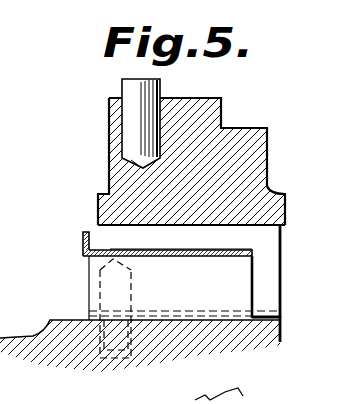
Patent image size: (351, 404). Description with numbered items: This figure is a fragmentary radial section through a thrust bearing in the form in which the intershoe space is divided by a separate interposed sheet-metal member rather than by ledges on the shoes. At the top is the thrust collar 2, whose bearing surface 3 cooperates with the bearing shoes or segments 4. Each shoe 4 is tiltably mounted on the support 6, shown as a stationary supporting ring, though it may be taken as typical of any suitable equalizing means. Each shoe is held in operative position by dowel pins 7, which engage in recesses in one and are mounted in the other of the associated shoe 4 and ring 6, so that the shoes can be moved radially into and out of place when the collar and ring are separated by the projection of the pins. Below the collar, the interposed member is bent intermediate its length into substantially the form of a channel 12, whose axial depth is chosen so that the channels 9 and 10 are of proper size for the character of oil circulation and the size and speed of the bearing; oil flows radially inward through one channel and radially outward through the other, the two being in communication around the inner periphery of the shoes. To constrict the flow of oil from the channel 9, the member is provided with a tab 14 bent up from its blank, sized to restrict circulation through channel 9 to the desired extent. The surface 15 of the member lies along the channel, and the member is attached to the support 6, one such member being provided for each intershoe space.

The thrust collar 2 is at (237, 157).
The bearing surface 3 is at (238, 218).
The bearing shoe 4 is at (268, 257).
The support 6 is at (272, 330).
The dowel pin 7 is at (118, 283).
The channel 9 is at (124, 231).
The channel 10 is at (160, 300).
The channel 12 is at (246, 278).
The tab 14 is at (77, 245).
The plate surface 15 is at (195, 262).